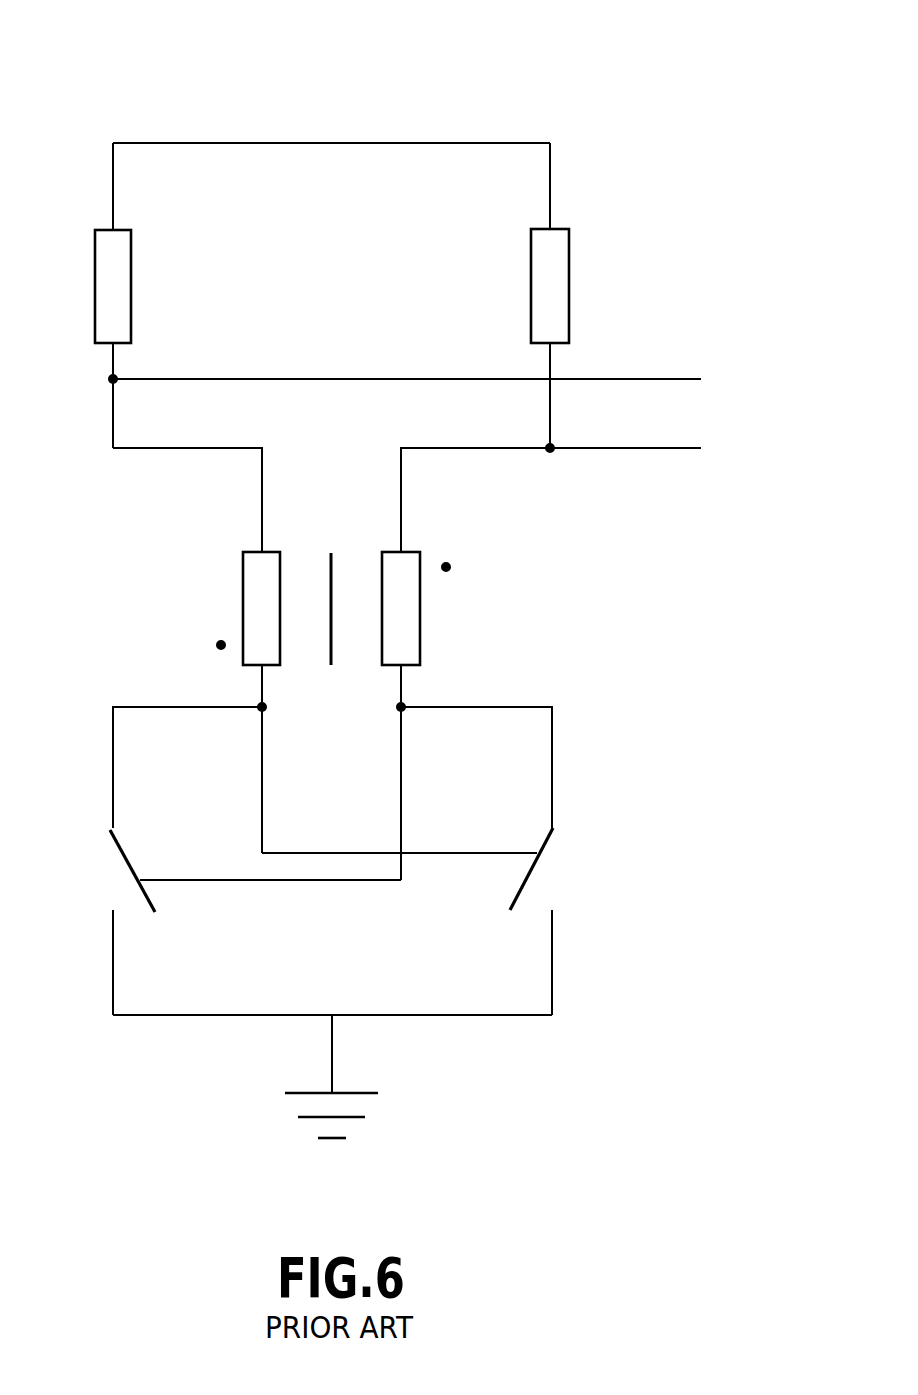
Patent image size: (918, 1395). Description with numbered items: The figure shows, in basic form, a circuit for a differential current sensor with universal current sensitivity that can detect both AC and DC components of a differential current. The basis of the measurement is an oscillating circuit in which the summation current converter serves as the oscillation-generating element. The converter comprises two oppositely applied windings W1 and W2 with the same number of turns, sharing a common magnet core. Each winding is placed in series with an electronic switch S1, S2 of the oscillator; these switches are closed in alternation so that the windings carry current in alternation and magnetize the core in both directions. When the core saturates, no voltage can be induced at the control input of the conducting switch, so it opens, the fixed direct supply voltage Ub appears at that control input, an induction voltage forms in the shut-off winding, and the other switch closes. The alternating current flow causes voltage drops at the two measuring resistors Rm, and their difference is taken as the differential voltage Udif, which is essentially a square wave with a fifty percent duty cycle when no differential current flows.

The fixed direct supply voltage Ub is at (331, 143).
The measuring resistor Rm is at (342, 295).
The differential voltage Udif is at (733, 355).
The first winding W1 is at (196, 650).
The second winding W2 is at (466, 664).
The first electronic switch S1 is at (239, 859).
The second electronic switch S2 is at (428, 859).